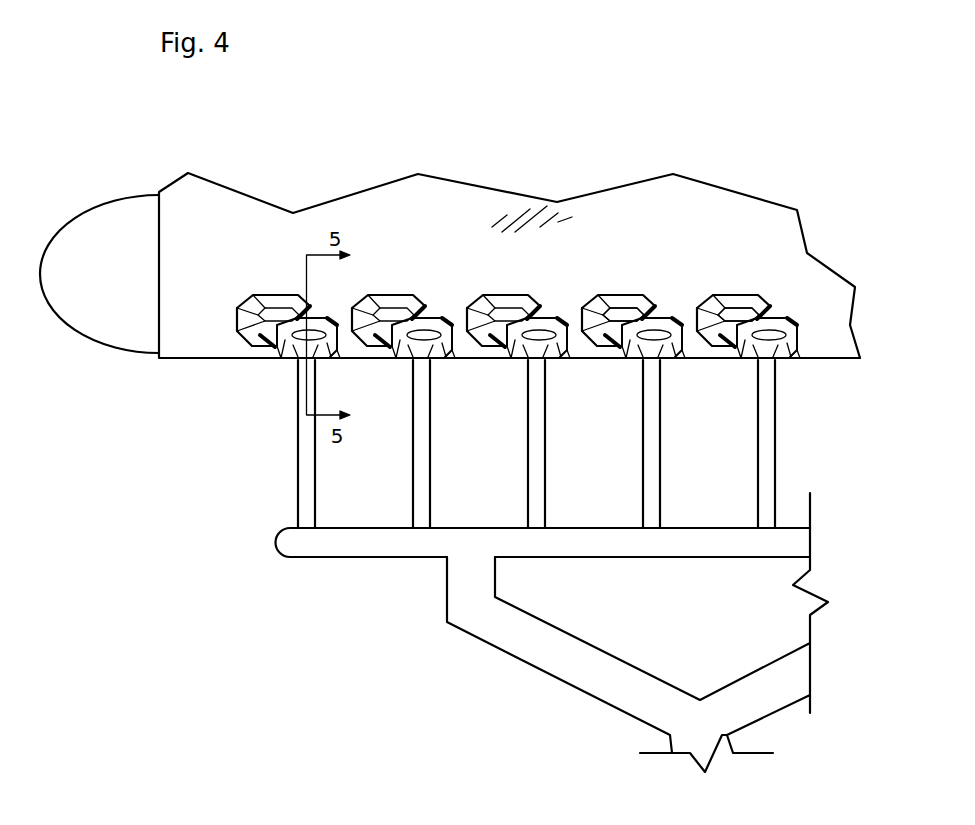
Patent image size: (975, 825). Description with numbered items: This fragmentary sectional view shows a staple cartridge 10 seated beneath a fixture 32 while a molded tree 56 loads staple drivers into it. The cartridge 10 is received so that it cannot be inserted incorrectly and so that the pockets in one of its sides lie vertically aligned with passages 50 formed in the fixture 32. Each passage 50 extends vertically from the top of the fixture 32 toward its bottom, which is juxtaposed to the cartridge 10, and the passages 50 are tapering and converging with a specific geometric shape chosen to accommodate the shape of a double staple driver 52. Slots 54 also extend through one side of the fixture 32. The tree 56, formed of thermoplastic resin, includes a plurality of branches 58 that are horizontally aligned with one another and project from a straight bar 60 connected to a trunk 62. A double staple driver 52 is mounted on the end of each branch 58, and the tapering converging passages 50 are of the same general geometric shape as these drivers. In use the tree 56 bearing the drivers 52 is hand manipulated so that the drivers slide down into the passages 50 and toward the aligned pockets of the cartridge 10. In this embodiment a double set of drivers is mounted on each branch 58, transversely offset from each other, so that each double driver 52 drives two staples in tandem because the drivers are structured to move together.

The cartridge 10 is at (113, 198).
The fixture 32 is at (208, 360).
The passages 50 is at (640, 298).
The double staple driver 52 is at (733, 313).
The slots 54 is at (627, 363).
The tree 56 is at (552, 632).
The branches 58 is at (430, 497).
The straight bar 60 is at (373, 557).
The trunk 62 is at (622, 710).